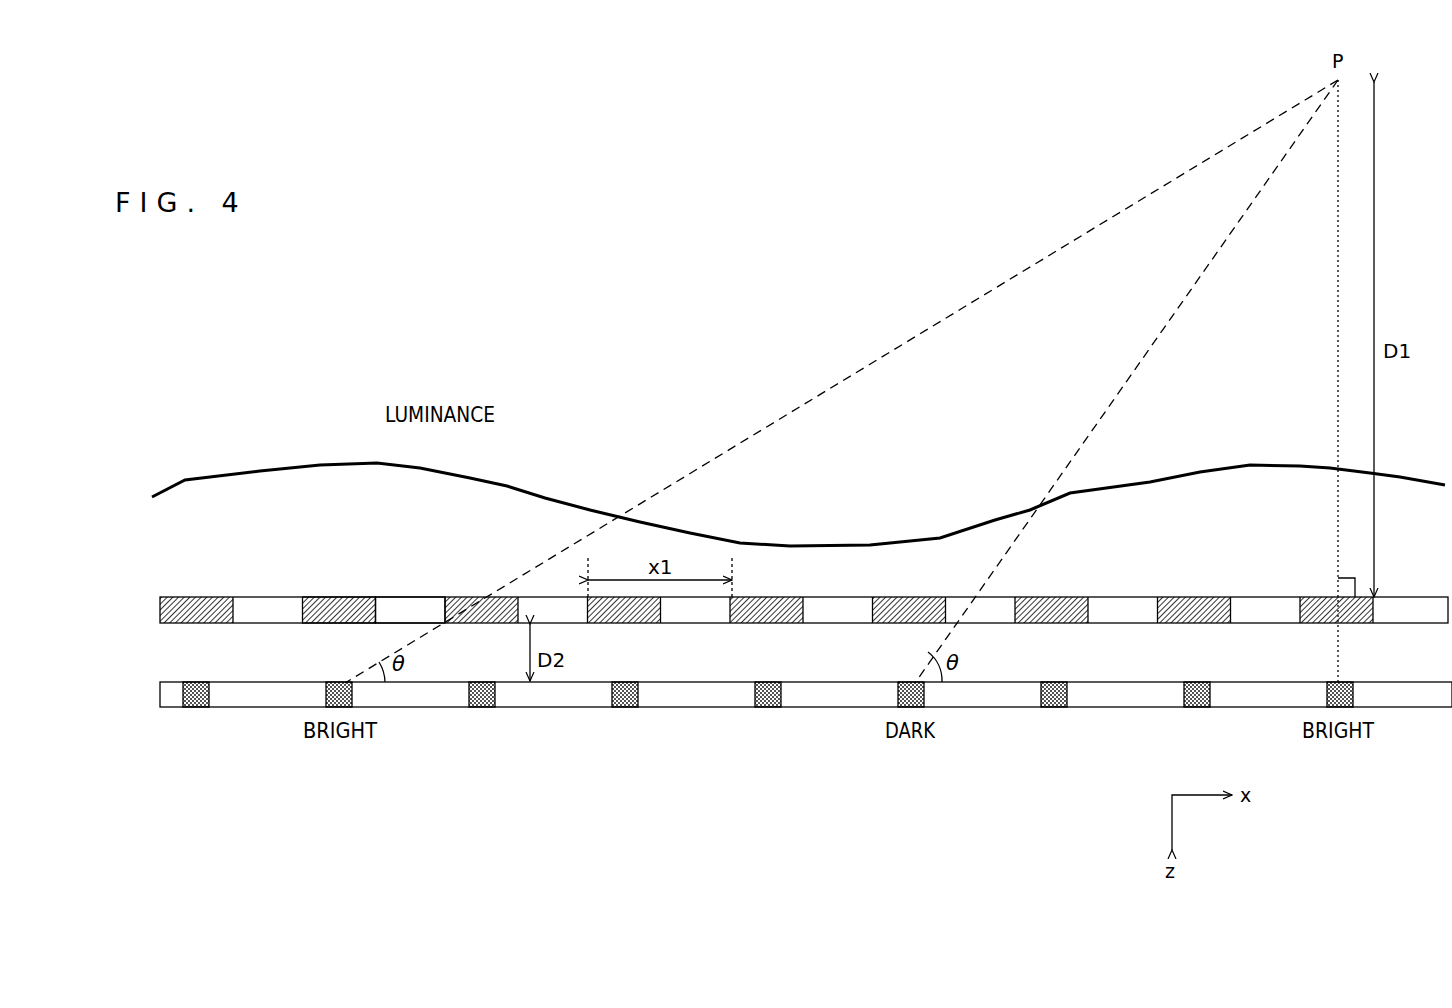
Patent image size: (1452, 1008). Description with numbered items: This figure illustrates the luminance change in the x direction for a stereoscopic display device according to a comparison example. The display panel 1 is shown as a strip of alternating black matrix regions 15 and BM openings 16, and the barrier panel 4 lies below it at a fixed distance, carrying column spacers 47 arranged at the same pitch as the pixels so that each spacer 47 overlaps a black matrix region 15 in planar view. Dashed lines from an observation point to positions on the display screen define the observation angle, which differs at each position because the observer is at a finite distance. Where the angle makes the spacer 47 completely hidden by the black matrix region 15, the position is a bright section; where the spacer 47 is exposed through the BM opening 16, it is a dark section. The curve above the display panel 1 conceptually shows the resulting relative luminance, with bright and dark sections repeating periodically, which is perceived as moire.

The display panel 1 is at (765, 575).
The barrier panel 4 is at (766, 721).
The black matrix region 15 is at (340, 597).
The BM opening 16 is at (405, 597).
The column spacer 47 is at (482, 707).